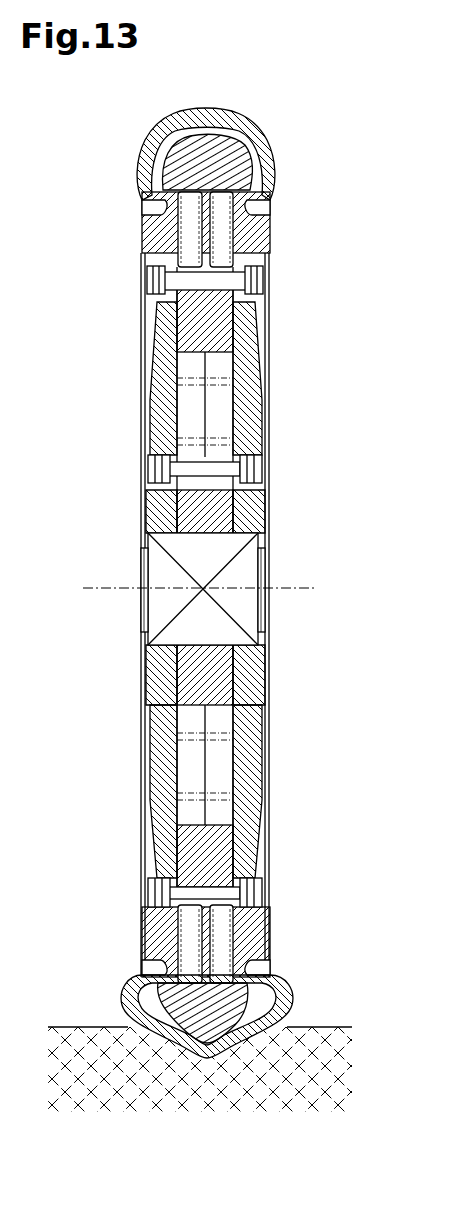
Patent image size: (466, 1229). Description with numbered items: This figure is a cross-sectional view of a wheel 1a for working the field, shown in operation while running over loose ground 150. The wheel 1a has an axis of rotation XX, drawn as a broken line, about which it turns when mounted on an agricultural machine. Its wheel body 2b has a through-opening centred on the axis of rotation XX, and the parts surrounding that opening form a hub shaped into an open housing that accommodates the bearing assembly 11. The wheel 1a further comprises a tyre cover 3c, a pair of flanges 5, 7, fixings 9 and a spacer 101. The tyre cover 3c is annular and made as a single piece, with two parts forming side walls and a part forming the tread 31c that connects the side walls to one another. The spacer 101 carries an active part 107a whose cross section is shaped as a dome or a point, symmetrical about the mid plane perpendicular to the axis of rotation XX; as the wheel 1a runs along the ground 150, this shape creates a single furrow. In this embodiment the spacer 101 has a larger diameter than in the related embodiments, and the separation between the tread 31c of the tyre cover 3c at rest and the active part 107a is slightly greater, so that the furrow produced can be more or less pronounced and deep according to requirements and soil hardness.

The wheel 1a is at (97, 190).
The wheel body 2b is at (118, 397).
The tyre cover 3c is at (241, 118).
The tread 31c is at (197, 110).
The active part 107a is at (253, 118).
The spacer 101 is at (228, 232).
The flange 5 is at (165, 363).
The flange 7 is at (247, 363).
The fixings 9 is at (250, 470).
The bearing assembly 11 is at (195, 622).
The ground 150 is at (88, 1027).
The axis of rotation XX is at (295, 588).